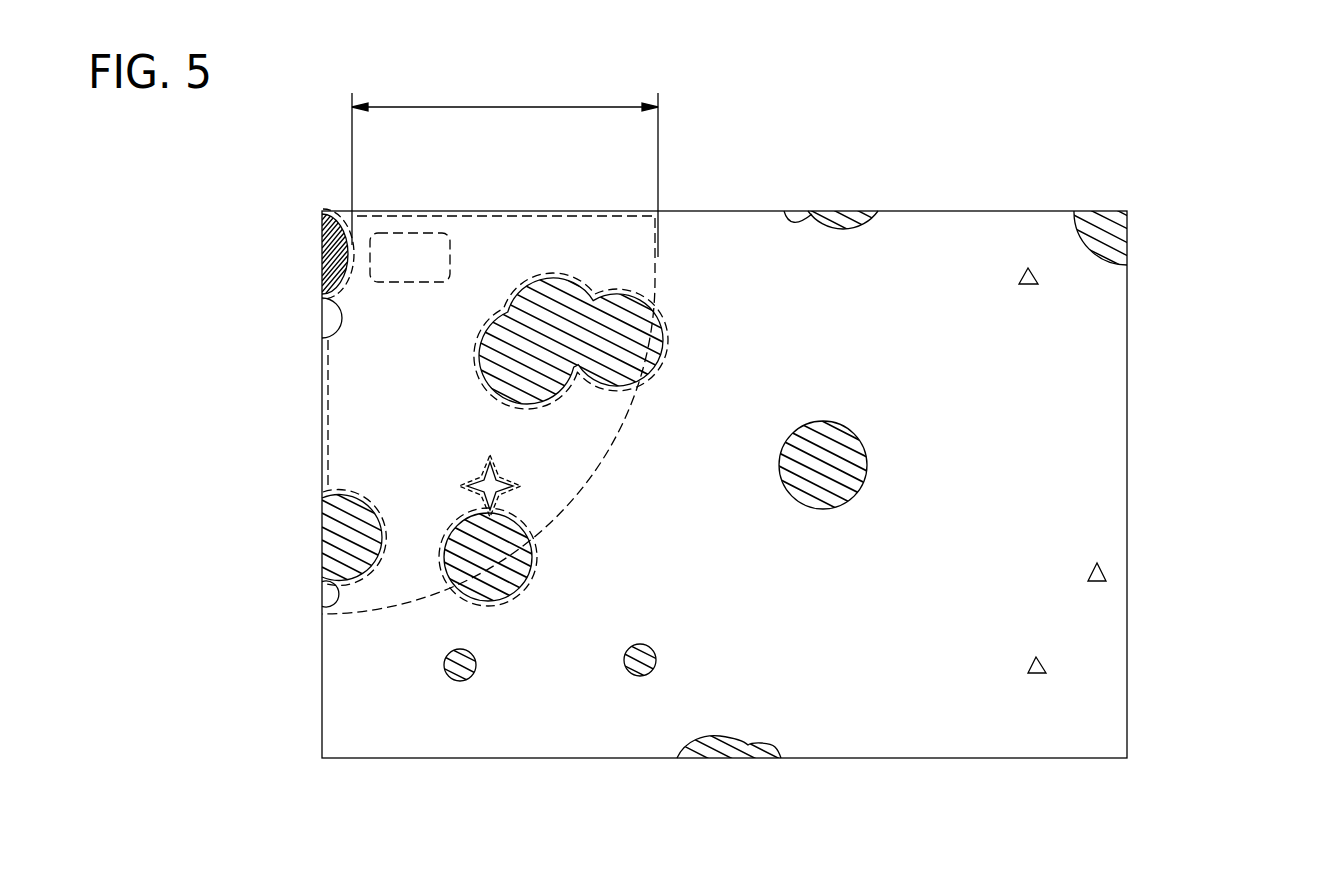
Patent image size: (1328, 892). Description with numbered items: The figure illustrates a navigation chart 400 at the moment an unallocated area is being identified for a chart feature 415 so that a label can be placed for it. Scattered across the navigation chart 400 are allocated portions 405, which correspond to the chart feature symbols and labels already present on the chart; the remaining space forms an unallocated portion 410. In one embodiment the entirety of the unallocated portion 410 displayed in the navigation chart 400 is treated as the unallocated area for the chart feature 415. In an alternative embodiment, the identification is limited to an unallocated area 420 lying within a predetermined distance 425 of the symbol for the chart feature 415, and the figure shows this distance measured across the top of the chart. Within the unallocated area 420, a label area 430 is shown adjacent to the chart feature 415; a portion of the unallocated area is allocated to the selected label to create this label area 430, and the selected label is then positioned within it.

The navigation chart 400 is at (1158, 396).
The allocated portions 405 is at (331, 328).
The unallocated portion 410 is at (897, 692).
The chart feature 415 is at (323, 262).
The unallocated area 420 is at (490, 248).
The predetermined distance 425 is at (447, 107).
The label area 430 is at (403, 233).